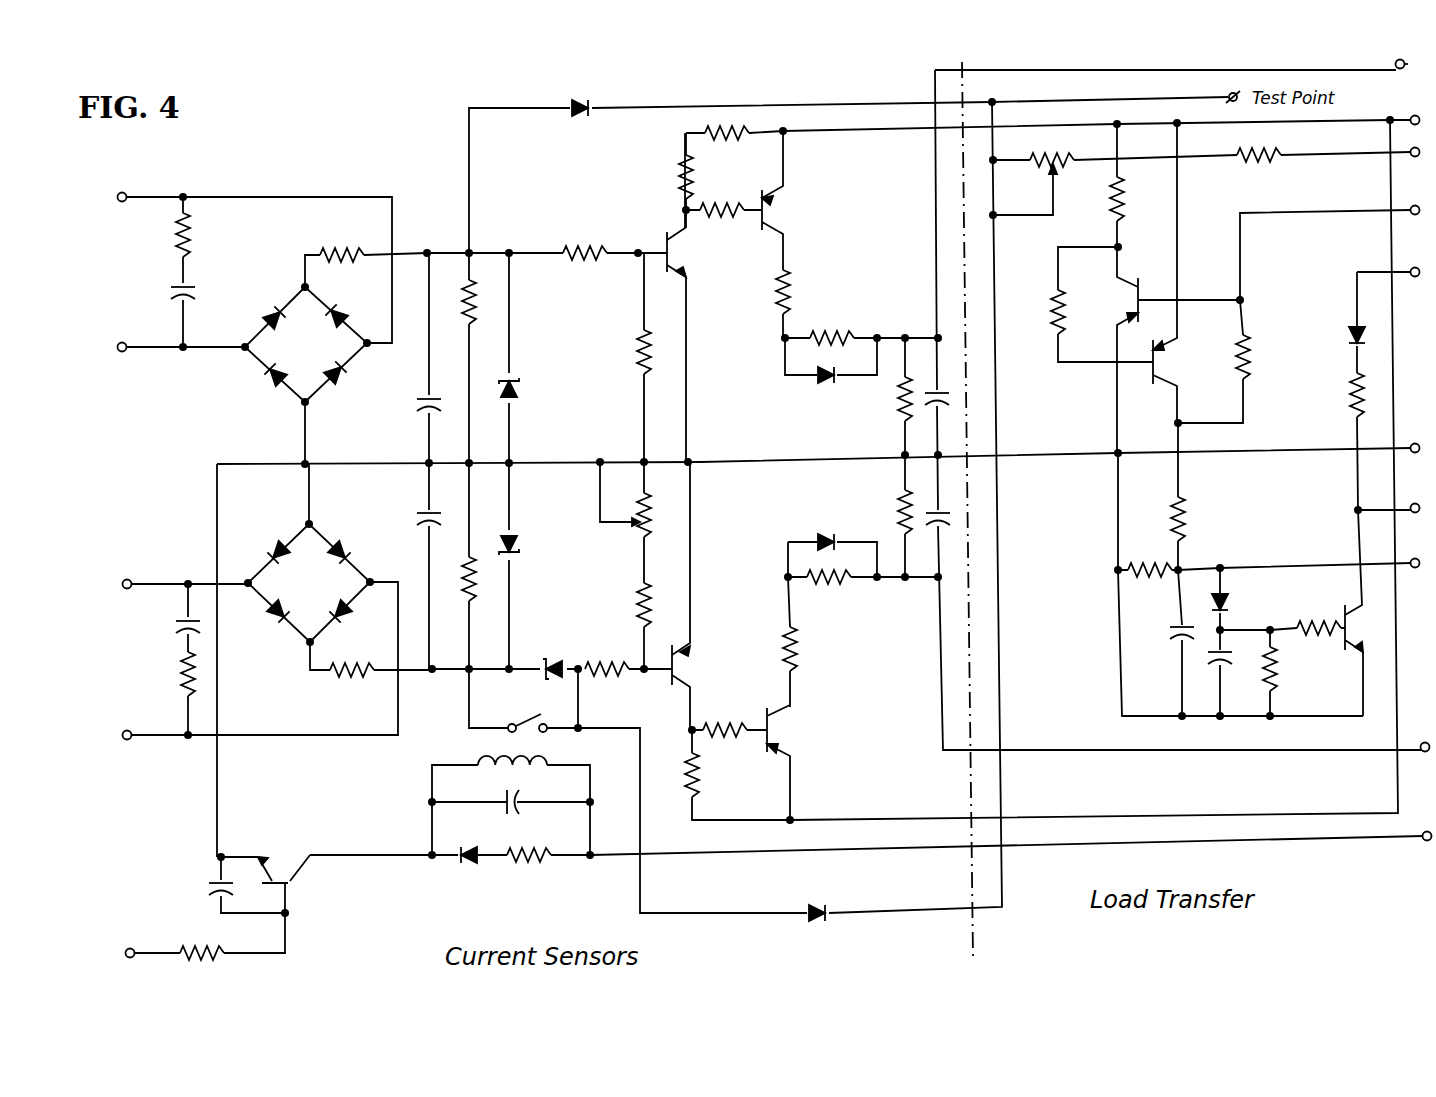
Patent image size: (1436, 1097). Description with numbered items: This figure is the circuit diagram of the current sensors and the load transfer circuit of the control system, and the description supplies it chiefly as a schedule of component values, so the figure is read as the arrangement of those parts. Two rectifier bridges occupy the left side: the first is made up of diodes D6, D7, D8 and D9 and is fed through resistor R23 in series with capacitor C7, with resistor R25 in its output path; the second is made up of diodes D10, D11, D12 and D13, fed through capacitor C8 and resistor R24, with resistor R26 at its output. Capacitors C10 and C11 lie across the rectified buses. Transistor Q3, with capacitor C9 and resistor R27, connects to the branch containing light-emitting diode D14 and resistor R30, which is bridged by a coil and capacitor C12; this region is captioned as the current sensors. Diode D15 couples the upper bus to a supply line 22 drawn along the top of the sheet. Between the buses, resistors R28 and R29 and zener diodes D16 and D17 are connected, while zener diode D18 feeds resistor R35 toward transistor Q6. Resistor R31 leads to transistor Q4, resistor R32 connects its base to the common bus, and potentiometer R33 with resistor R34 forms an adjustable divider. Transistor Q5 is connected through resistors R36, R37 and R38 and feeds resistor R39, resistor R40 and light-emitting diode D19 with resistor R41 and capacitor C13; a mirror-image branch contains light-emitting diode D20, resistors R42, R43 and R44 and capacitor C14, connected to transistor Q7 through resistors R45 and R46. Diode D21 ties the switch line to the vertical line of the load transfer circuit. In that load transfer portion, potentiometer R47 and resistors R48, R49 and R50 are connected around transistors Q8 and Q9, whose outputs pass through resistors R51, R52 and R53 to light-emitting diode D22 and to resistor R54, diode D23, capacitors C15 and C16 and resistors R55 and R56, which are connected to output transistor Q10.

The supply line 22 is at (1418, 66).
The resistor R23 is at (190, 238).
The capacitor C7 is at (193, 290).
The resistor R25 is at (348, 251).
The diode D6 is at (263, 324).
The diode D7 is at (345, 305).
The diode D8 is at (342, 384).
The diode D9 is at (265, 387).
The capacitor C10 is at (418, 410).
The capacitor C11 is at (410, 524).
The diode D10 is at (270, 540).
The diode D11 is at (345, 540).
The diode D12 is at (350, 610).
The diode D13 is at (273, 628).
The resistor R26 is at (352, 680).
The capacitor C8 is at (185, 624).
The resistor R24 is at (183, 682).
The capacitor C9 is at (205, 888).
The transistor Q3 is at (295, 888).
The resistor R27 is at (215, 960).
The light emitting diode D14 is at (458, 852).
The resistor R30 is at (535, 865).
The capacitor C12 is at (515, 812).
The diode D15 is at (580, 120).
The resistor R28 is at (478, 315).
The resistor R29 is at (478, 600).
The zener diode D16 is at (520, 395).
The zener diode D17 is at (520, 545).
The zener diode D18 is at (553, 655).
The resistor R31 is at (592, 245).
The resistor R32 is at (635, 358).
The potentiometer R33 is at (633, 537).
The resistor R34 is at (633, 602).
The resistor R35 is at (605, 680).
The transistor Q4 is at (682, 268).
The transistor Q5 is at (770, 210).
The transistor Q6 is at (690, 660).
The transistor Q7 is at (775, 730).
The resistor R36 is at (682, 168).
The resistor R37 is at (730, 140).
The resistor R38 is at (722, 220).
The resistor R39 is at (795, 300).
The resistor R40 is at (838, 328).
The light emitting diode D19 is at (800, 380).
The light emitting diode D20 is at (813, 537).
The diode D21 is at (822, 898).
The resistor R41 is at (895, 405).
The resistor R42 is at (895, 500).
The resistor R43 is at (832, 590).
The resistor R44 is at (798, 652).
The resistor R45 is at (722, 722).
The resistor R46 is at (700, 785).
The capacitor C13 is at (952, 400).
The capacitor C14 is at (952, 518).
The potentiometer R47 is at (1050, 150).
The resistor R48 is at (1125, 200).
The resistor R49 is at (1050, 292).
The resistor R50 is at (1258, 165).
The resistor R51 is at (1250, 365).
The resistor R52 is at (1355, 408).
The resistor R53 is at (1190, 515).
The resistor R54 is at (1130, 564).
The resistor R55 is at (1318, 615).
The resistor R56 is at (1280, 672).
The transistor Q8 is at (1130, 300).
The transistor Q9 is at (1165, 365).
The transistor Q10 is at (1355, 620).
The light emitting diode D22 is at (1345, 342).
The diode D23 is at (1228, 605).
The capacitor C15 is at (1175, 632).
The capacitor C16 is at (1210, 665).